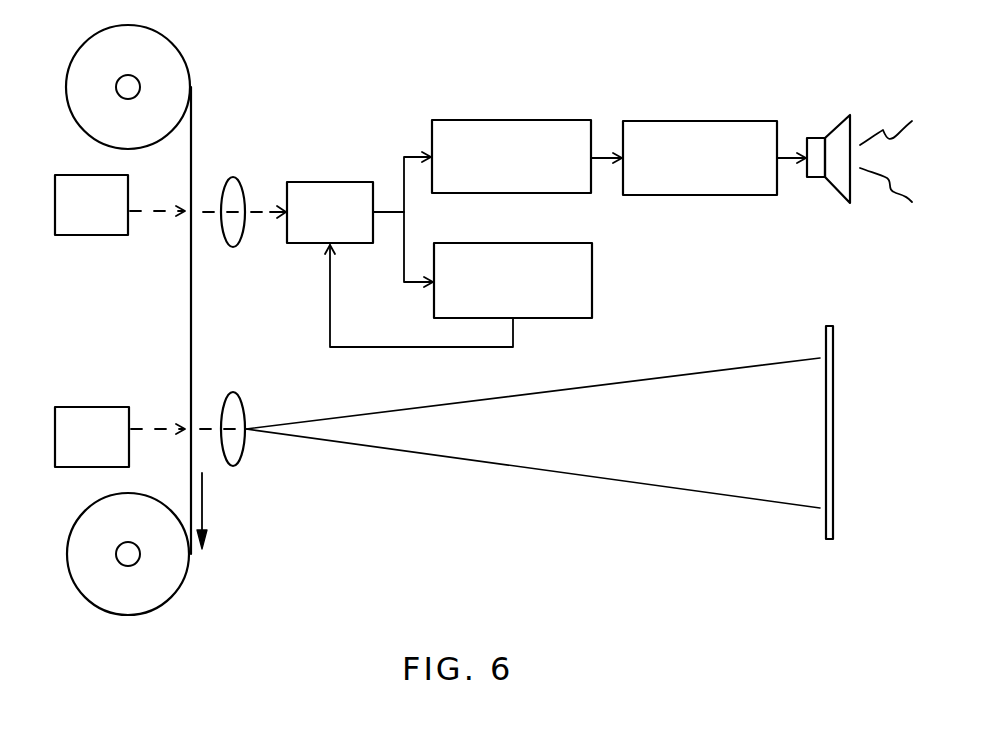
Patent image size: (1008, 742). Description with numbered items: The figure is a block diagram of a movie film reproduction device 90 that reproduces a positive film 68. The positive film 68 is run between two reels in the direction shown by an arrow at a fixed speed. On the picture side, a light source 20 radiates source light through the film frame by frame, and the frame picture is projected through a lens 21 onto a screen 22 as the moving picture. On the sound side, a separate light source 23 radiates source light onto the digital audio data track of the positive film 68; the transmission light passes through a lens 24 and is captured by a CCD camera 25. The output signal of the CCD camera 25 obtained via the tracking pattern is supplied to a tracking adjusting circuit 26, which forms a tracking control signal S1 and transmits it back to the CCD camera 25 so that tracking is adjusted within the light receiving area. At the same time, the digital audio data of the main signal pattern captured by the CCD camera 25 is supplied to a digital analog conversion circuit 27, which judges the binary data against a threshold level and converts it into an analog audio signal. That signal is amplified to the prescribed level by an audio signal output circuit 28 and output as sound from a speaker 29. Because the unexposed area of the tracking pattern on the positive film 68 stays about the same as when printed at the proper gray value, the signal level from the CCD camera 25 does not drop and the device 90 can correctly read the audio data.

The movie film reproduction device 90 is at (414, 59).
The positive film 68 is at (192, 148).
The light source 23 is at (108, 236).
The lens 24 is at (237, 247).
The CCD camera 25 is at (330, 182).
The digital analog conversion circuit 27 is at (563, 120).
The tracking adjusting circuit 26 is at (592, 297).
The tracking control signal S1 is at (377, 346).
The audio signal output circuit 28 is at (725, 121).
The speaker 29 is at (850, 115).
The light source 20 is at (112, 407).
The lens 21 is at (237, 467).
The screen 22 is at (833, 528).